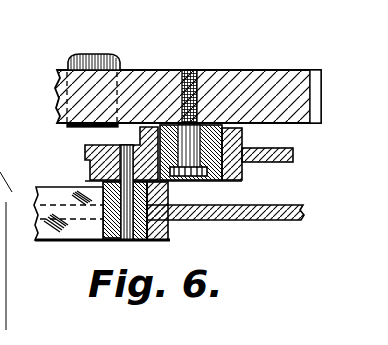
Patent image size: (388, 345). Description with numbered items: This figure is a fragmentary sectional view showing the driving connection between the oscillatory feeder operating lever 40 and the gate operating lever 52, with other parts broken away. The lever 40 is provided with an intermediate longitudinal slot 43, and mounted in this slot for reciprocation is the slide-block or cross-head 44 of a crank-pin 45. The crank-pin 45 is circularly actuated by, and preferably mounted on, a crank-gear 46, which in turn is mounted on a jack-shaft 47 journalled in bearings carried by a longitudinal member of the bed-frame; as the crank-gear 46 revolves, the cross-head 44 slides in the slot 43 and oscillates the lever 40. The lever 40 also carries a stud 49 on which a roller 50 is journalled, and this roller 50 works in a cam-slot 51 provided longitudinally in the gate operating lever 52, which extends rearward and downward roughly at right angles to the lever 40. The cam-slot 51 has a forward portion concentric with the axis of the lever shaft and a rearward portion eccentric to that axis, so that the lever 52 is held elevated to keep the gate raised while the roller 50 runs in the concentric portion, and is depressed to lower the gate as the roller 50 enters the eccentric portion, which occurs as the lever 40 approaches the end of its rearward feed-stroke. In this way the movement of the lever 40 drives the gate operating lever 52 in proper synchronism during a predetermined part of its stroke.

The lever 40 is at (293, 162).
The longitudinal slot 43 is at (242, 158).
The slide-block or cross-head 44 is at (220, 180).
The crank-pin 45 is at (188, 177).
The crank-gear 46 is at (292, 60).
The jack-shaft 47 is at (97, 55).
The stud 49 is at (128, 240).
The roller 50 is at (100, 238).
The cam-slot 51 is at (167, 242).
The gate operating lever 52 is at (52, 243).